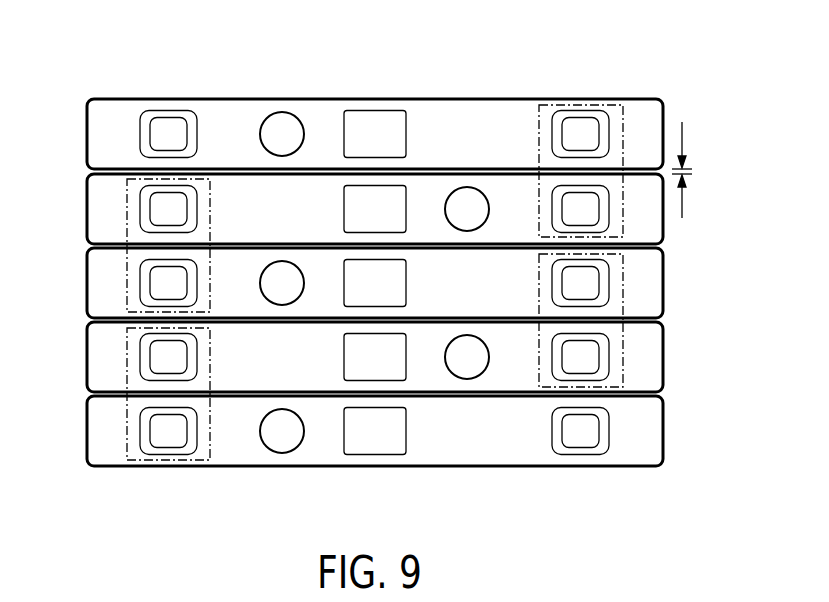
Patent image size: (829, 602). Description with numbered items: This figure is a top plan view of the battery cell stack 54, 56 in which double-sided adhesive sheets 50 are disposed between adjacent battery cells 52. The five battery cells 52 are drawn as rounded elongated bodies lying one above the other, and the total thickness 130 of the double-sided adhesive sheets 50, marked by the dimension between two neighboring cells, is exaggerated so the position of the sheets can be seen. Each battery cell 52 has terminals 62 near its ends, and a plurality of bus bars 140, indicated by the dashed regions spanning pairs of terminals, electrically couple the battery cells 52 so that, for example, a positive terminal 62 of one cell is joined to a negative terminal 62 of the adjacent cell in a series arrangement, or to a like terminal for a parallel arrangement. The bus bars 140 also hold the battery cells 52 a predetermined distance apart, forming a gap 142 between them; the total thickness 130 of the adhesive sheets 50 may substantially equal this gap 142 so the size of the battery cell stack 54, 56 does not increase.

The double-sided adhesive sheet 50 is at (87, 177).
The battery cell 52 is at (433, 272).
The battery cell stack 54 is at (395, 282).
The battery cell stack 56 is at (709, 189).
The terminal 62 is at (172, 130).
The total thickness 130 is at (685, 142).
The bus bar 140 is at (127, 268).
The gap 142 is at (373, 282).